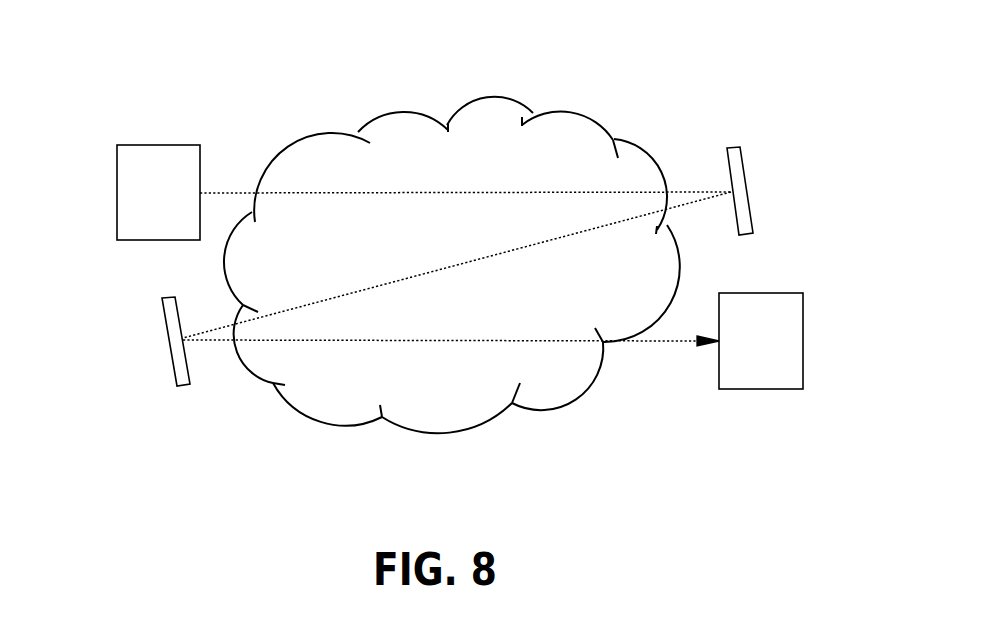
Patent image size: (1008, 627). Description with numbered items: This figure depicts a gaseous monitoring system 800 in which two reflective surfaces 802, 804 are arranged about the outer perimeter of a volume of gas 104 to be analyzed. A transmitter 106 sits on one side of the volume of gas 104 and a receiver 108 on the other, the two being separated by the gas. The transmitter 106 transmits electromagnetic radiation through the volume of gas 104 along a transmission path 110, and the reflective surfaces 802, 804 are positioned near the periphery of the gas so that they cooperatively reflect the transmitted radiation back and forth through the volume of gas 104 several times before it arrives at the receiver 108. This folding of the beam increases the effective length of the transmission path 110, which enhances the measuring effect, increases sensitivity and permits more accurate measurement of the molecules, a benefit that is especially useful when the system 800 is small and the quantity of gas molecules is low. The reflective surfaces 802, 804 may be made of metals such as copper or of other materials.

The gaseous monitoring system 800 is at (122, 41).
The volume of gas 104 is at (493, 95).
The transmitter 106 is at (117, 192).
The receiver 108 is at (803, 341).
The transmission path 110 is at (684, 341).
The reflective surface 802 is at (745, 172).
The reflective surface 804 is at (168, 342).